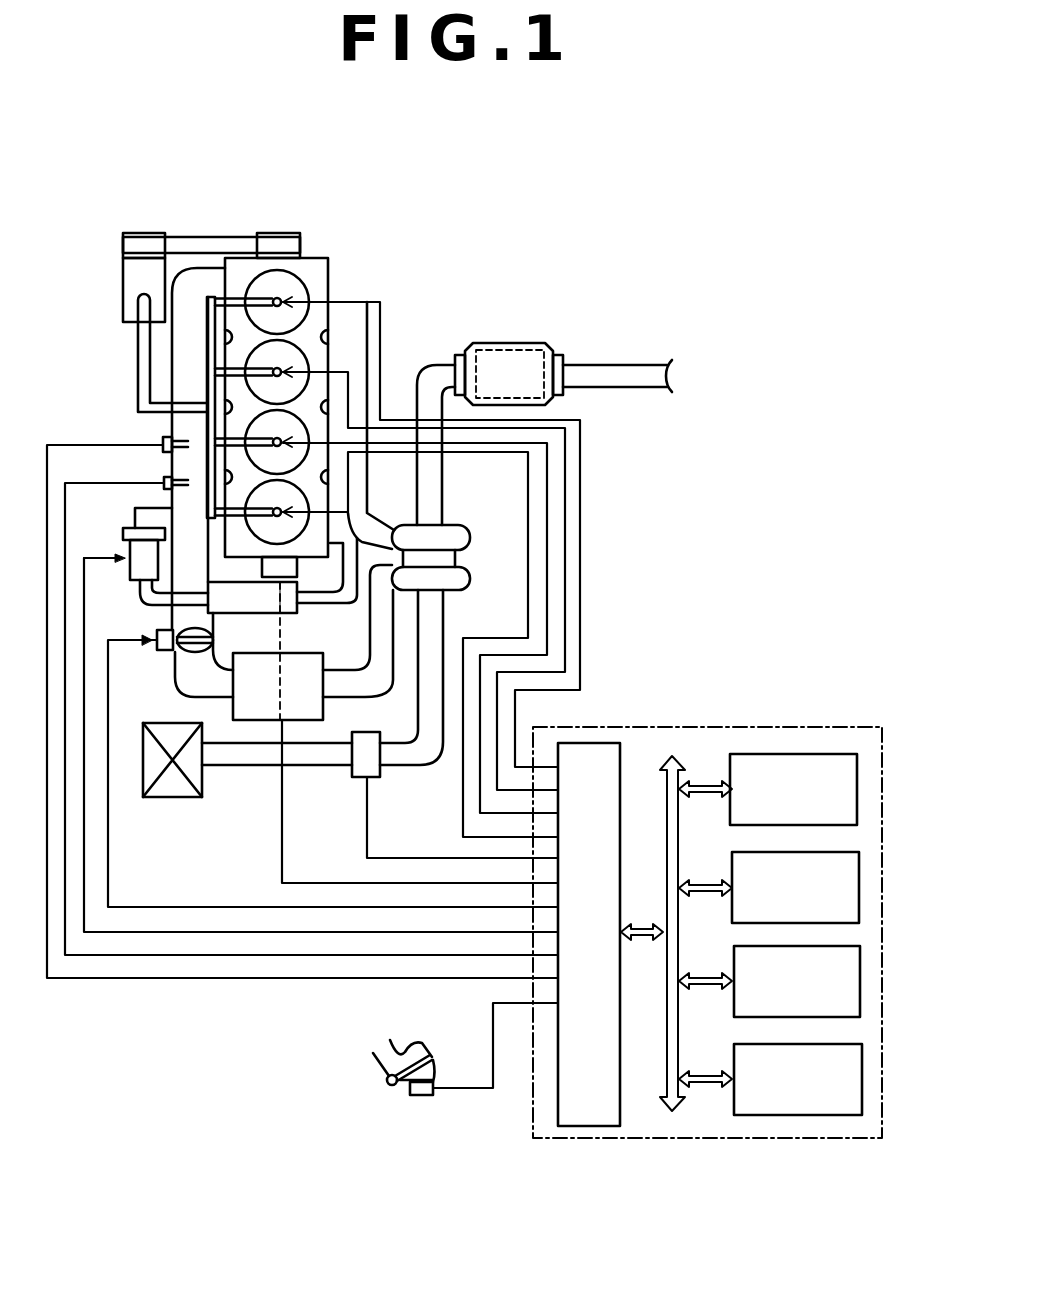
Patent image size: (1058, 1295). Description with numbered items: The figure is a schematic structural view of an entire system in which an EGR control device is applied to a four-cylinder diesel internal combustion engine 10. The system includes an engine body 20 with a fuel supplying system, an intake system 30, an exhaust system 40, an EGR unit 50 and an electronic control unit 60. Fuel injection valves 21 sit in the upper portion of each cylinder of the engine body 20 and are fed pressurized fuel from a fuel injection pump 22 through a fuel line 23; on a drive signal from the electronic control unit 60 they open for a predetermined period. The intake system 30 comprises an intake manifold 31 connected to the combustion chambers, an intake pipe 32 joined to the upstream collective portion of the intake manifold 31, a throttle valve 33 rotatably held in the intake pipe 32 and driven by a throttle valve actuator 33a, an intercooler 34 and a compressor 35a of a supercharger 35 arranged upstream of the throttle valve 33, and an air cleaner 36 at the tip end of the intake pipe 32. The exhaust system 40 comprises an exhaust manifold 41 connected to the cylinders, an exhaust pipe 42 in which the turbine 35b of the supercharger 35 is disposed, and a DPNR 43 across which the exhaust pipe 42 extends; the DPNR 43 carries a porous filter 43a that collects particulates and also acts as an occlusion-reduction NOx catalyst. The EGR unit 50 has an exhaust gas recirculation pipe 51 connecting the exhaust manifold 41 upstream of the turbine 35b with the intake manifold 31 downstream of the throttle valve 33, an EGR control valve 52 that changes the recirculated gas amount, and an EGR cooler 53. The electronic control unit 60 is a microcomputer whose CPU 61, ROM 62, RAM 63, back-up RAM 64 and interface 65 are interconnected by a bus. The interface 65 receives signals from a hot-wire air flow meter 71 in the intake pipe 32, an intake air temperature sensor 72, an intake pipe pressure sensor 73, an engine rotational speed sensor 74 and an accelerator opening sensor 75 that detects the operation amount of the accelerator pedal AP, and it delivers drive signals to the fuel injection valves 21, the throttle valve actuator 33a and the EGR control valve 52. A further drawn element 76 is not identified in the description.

The internal combustion engine 10 is at (320, 178).
The engine body 20 is at (314, 247).
The fuel injection valves 21 is at (277, 512).
The fuel injection pump 22 is at (123, 299).
The fuel line 23 is at (138, 384).
The intake system 30 is at (168, 426).
The intake manifold 31 is at (172, 462).
The intake pipe 32 is at (357, 697).
The throttle valve 33 is at (192, 654).
The throttle valve actuator 33a is at (161, 654).
The intercooler 34 is at (236, 706).
The supercharger 35 is at (455, 552).
The compressor 35a is at (450, 591).
The turbine 35b is at (458, 527).
The air cleaner 36 is at (173, 797).
The exhaust system 40 is at (479, 322).
The exhaust manifold 41 is at (368, 478).
The exhaust pipe 42 is at (598, 366).
The diesel particulate filter (DPNR) 43 is at (518, 351).
The filter 43a is at (528, 350).
The EGR unit 50 is at (307, 607).
The exhaust gas recirculation pipe 51 is at (340, 605).
The EGR control valve 52 is at (128, 549).
The EGR cooler 53 is at (239, 613).
The electronic control unit 60 is at (731, 921).
The CPU 61 is at (857, 789).
The ROM 62 is at (859, 887).
The RAM 63 is at (860, 981).
The back-up RAM 64 is at (862, 1080).
The interface 65 is at (625, 1114).
The hot-wire air flow meter 71 is at (370, 779).
The intake air temperature sensor 72 is at (160, 486).
The intake pipe pressure sensor 73 is at (160, 447).
The engine rotational speed sensor 74 is at (297, 567).
The accelerator opening sensor 75 is at (425, 1095).
The purge passage 76 is at (128, 519).
The accelerator pedal AP is at (427, 1053).